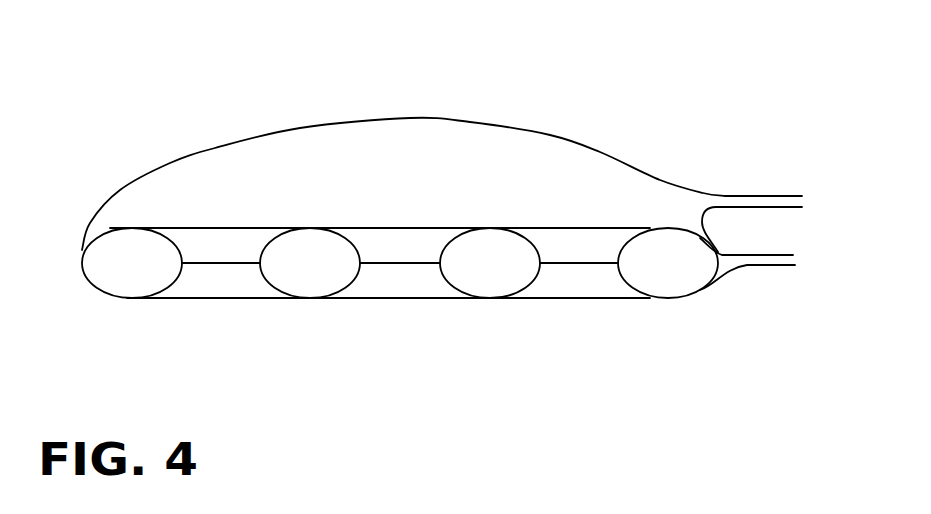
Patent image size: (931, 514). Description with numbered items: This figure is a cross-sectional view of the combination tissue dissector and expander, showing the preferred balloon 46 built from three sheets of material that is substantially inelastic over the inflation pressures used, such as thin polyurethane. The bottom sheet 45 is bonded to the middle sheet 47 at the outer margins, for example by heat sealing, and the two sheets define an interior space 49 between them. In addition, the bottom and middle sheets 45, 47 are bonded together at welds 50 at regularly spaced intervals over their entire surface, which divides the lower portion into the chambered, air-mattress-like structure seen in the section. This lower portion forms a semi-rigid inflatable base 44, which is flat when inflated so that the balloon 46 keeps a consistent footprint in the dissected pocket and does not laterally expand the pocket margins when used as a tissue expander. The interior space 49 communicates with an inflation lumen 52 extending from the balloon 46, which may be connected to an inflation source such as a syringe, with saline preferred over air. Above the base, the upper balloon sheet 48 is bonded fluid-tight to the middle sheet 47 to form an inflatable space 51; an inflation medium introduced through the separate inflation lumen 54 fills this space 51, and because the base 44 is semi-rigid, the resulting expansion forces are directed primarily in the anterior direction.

The semi-rigid inflatable base 44 is at (83, 288).
The bottom sheet 45 is at (205, 298).
The balloon 46 is at (437, 96).
The middle sheet 47 is at (192, 225).
The upper balloon sheet 48 is at (550, 135).
The interior space 49 is at (315, 272).
The welds 50 is at (222, 262).
The inflatable space 51 is at (360, 152).
The inflation lumen 52 is at (763, 267).
The inflation lumen 54 is at (752, 194).